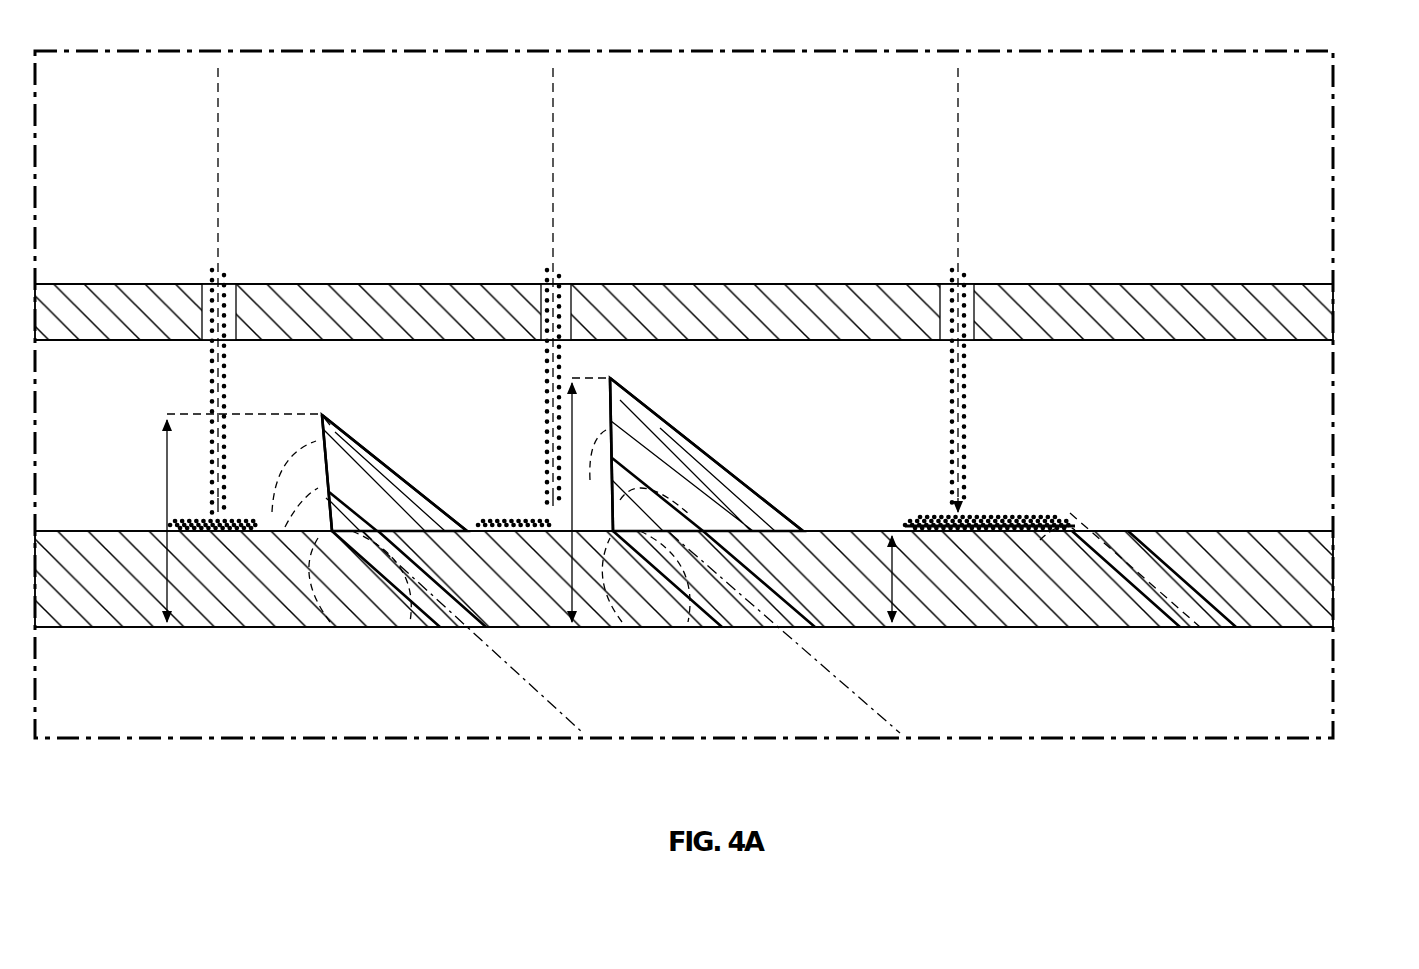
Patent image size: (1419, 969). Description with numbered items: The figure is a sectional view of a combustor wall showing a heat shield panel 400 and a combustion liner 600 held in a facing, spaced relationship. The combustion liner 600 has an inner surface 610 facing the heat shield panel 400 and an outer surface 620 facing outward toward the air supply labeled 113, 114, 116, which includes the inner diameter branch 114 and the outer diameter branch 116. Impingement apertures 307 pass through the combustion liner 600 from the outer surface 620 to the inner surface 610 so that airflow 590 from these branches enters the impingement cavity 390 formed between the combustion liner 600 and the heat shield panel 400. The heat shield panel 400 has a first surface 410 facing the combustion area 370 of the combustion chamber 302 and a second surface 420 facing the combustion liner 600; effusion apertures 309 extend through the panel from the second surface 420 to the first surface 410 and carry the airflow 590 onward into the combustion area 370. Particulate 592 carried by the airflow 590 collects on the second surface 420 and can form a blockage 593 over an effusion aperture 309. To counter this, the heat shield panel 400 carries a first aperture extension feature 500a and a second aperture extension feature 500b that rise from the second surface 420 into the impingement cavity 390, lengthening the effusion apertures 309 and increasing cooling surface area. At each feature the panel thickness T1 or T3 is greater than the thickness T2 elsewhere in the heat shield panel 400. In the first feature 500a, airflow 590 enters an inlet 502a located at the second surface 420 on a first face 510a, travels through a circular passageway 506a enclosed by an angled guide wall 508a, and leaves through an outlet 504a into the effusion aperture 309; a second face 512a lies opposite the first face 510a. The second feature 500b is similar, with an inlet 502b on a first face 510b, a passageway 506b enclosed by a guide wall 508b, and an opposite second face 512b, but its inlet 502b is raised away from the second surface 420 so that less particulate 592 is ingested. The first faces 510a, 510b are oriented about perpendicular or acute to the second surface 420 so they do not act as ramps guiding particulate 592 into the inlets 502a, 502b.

The fluid/gas region 113 is at (731, 206).
The inner diameter branch 114 is at (779, 206).
The outer diameter branch 116 is at (819, 206).
The combustion chamber 302 is at (670, 731).
The combustion area 370 is at (729, 731).
The impingement apertures 307 is at (237, 316).
The effusion apertures 309 is at (430, 618).
The impingement cavity 390 is at (92, 378).
The heat shield panel 400 is at (1310, 580).
The first surface 410 is at (1318, 628).
The second surface 420 is at (1318, 530).
The aperture extension feature 500a is at (542, 484).
The aperture extension feature 500b is at (741, 436).
The inlet 502a is at (318, 447).
The inlet 502b is at (610, 453).
The outlet 504a is at (414, 566).
The passageway 506a is at (402, 482).
The passageway 506b is at (740, 483).
The guide wall 508a is at (354, 506).
The guide wall 508b is at (680, 513).
The first face 510a is at (323, 430).
The first face 510b is at (615, 435).
The second face 512a is at (355, 440).
The second face 512b is at (688, 440).
The airflow 590 is at (218, 142).
The particulate 592 is at (210, 447).
The blockage 593 is at (1072, 543).
The combustion liner 600 is at (1310, 306).
The inner surface 610 is at (1315, 341).
The outer surface 620 is at (1312, 283).
The thickness T1 is at (162, 585).
The thickness T2 is at (886, 590).
The thickness T3 is at (566, 590).